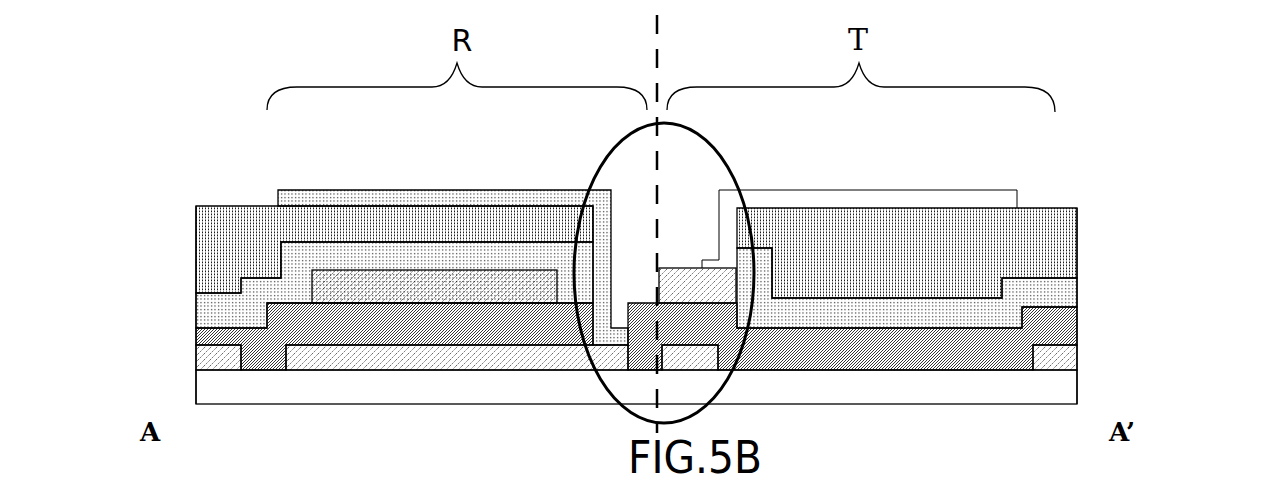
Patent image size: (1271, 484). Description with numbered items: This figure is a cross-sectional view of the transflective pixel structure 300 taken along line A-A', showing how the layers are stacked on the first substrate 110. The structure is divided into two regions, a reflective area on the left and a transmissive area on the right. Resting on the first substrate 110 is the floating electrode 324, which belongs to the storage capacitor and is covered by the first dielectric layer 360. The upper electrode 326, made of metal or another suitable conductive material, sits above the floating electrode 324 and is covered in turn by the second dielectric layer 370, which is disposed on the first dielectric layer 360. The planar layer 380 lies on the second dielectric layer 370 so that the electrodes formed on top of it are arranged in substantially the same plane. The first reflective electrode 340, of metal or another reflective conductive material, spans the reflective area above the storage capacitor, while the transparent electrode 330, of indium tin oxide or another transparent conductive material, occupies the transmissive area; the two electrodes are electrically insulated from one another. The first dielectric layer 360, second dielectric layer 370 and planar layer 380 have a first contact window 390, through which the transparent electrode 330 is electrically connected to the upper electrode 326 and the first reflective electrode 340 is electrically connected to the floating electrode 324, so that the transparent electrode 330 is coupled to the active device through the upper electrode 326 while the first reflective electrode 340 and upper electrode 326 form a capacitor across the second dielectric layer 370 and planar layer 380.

The first substrate 110 is at (276, 390).
The transflective pixel structure 300 is at (1075, 148).
The floating electrode 324 is at (340, 362).
The upper electrode 326 is at (368, 294).
The transparent electrode 330 is at (1025, 183).
The first reflective electrode 340 is at (300, 198).
The first dielectric layer 360 is at (1035, 334).
The second dielectric layer 370 is at (1035, 296).
The planar layer 380 is at (1013, 238).
The first contact window 390 is at (737, 174).